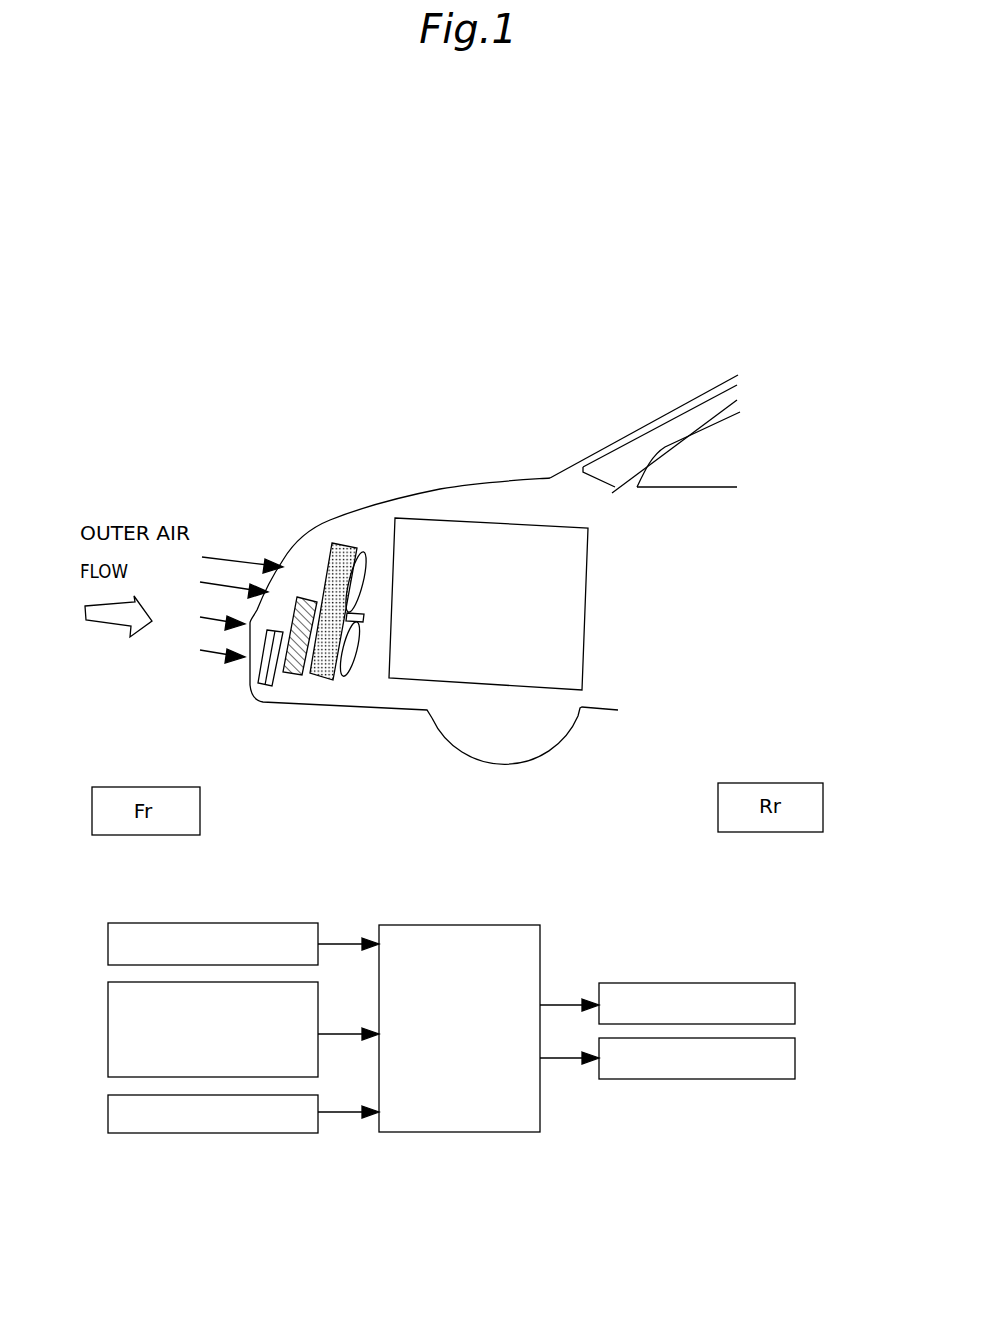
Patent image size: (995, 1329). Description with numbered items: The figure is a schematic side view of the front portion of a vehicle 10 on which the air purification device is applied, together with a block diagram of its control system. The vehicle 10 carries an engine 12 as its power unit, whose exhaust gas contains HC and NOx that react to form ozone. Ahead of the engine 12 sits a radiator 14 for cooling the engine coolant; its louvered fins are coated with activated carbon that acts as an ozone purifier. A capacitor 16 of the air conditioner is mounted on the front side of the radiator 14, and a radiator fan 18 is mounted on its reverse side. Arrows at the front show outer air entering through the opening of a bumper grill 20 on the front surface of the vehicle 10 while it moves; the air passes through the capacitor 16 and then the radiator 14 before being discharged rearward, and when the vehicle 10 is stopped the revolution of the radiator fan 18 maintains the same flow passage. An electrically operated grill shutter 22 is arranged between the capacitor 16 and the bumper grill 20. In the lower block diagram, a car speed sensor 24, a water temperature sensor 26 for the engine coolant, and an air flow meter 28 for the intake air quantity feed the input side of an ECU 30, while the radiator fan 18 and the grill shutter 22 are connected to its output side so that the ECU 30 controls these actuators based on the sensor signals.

The vehicle 10 is at (424, 490).
The engine 12 is at (588, 607).
The radiator 14 is at (352, 545).
The capacitor 16 is at (292, 678).
The radiator fan 18 is at (361, 556).
The bumper grill 20 is at (283, 558).
The grill shutter 22 is at (267, 688).
The car speed sensor 24 is at (108, 950).
The water temperature sensor 26 is at (108, 1010).
The air flow meter 28 is at (108, 1120).
The ECU 30 is at (479, 925).